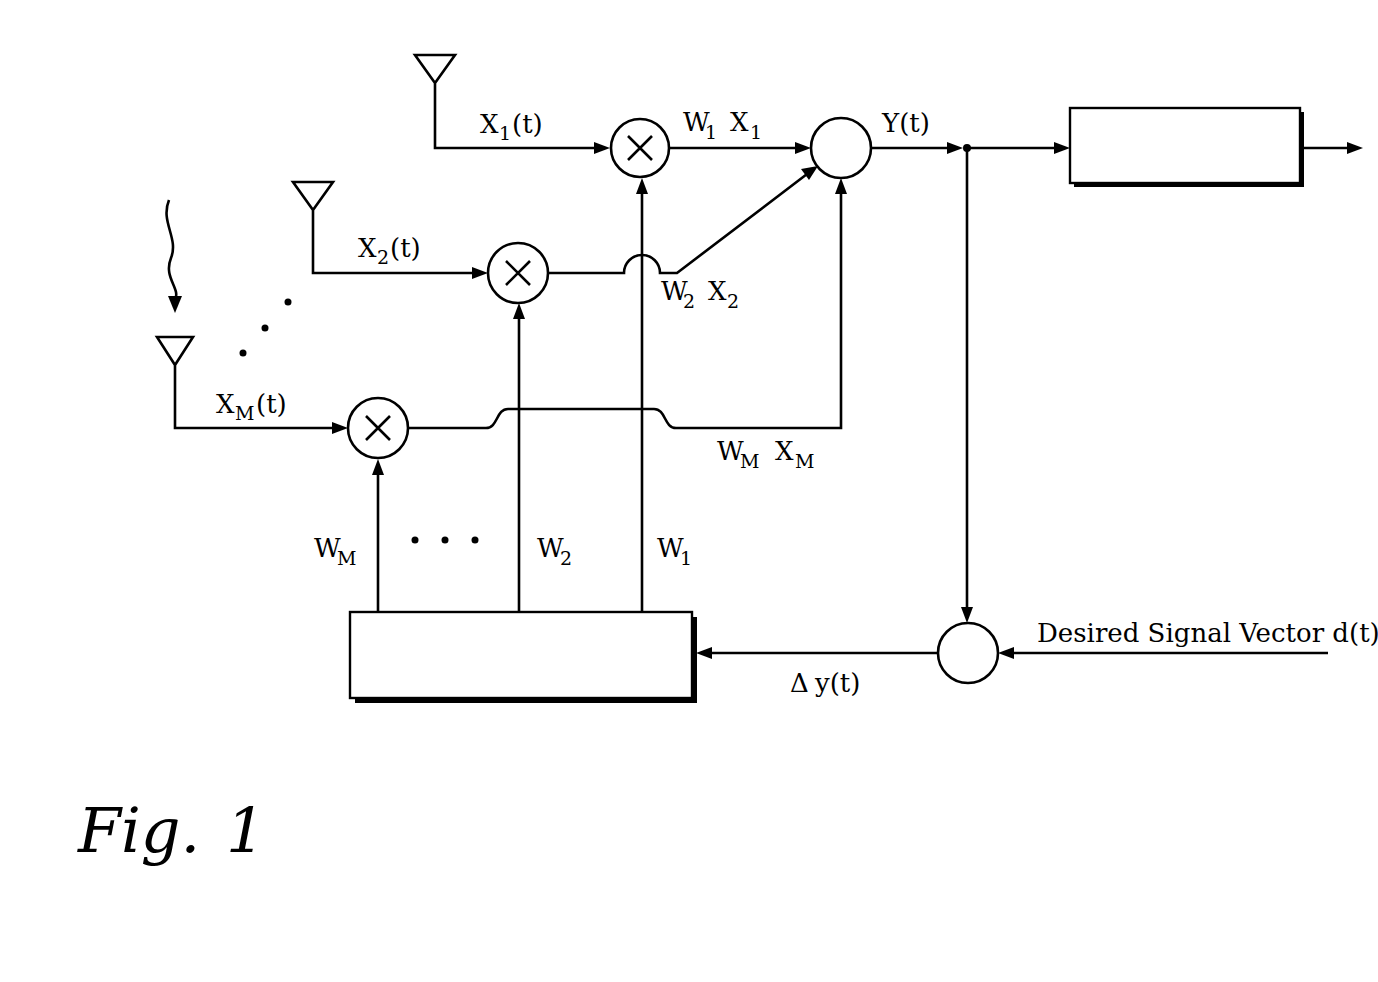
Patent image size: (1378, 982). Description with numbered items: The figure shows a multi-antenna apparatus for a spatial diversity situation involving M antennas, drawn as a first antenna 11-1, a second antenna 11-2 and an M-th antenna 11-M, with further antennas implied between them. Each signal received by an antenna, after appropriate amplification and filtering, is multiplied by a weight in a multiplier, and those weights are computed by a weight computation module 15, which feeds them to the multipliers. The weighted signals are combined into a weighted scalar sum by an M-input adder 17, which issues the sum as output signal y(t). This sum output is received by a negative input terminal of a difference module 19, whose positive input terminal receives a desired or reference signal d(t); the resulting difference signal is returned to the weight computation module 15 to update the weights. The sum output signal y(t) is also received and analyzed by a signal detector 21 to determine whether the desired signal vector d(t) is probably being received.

The antenna 11-1 is at (418, 56).
The antenna 11-2 is at (296, 183).
The antenna 11-M is at (159, 338).
The weight computation module 15 is at (503, 702).
The M-input adder 17 is at (845, 118).
The difference module 19 is at (966, 684).
The signal detector 21 is at (1174, 187).